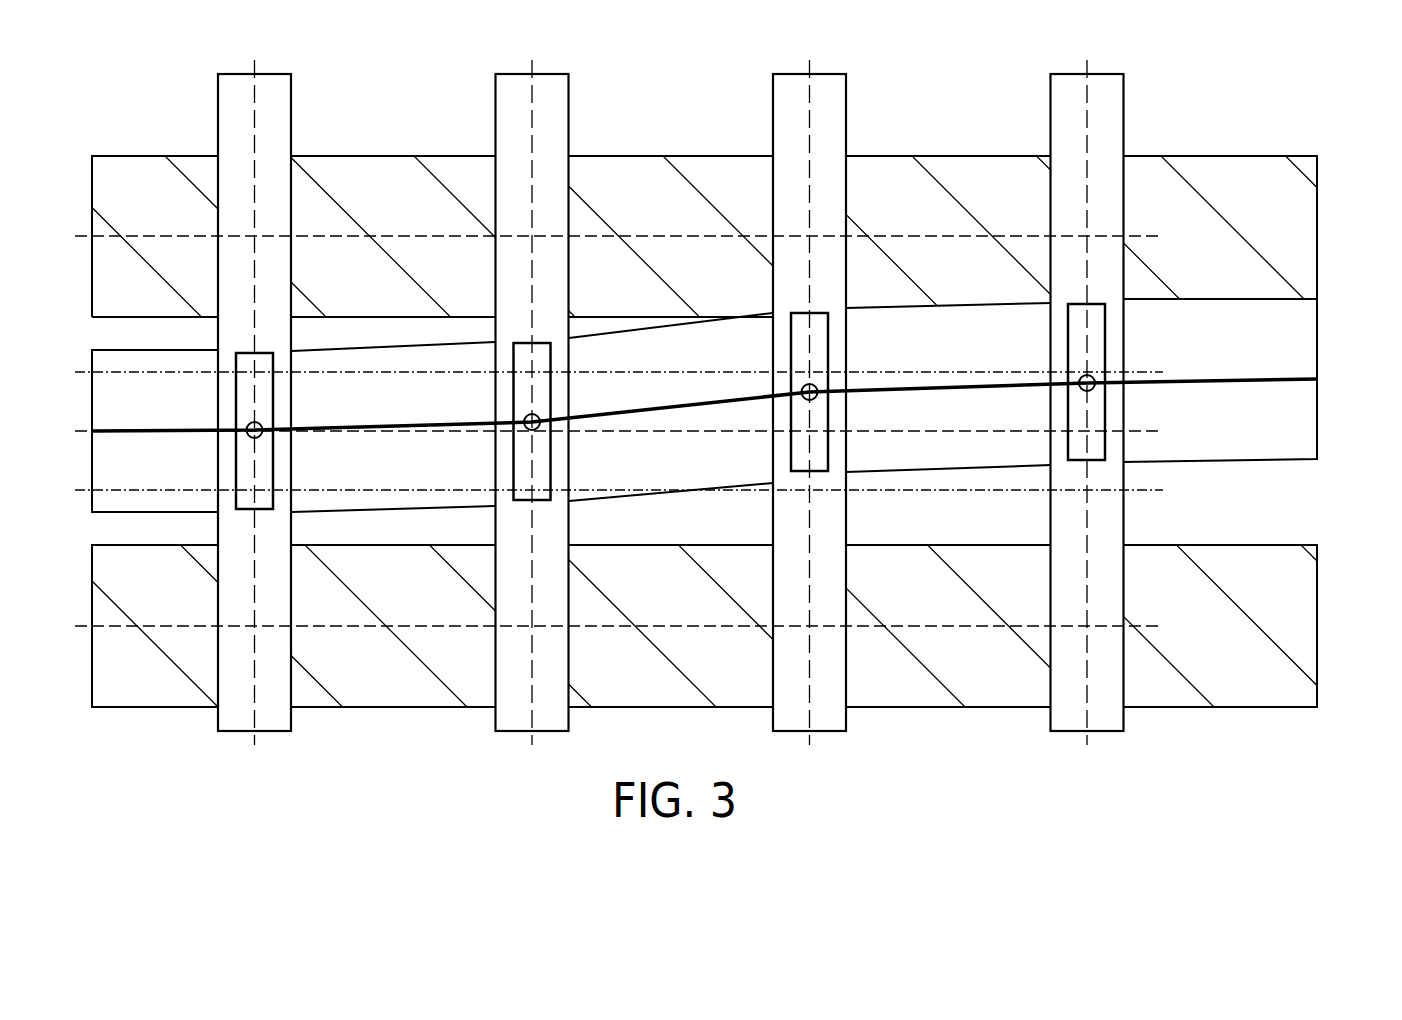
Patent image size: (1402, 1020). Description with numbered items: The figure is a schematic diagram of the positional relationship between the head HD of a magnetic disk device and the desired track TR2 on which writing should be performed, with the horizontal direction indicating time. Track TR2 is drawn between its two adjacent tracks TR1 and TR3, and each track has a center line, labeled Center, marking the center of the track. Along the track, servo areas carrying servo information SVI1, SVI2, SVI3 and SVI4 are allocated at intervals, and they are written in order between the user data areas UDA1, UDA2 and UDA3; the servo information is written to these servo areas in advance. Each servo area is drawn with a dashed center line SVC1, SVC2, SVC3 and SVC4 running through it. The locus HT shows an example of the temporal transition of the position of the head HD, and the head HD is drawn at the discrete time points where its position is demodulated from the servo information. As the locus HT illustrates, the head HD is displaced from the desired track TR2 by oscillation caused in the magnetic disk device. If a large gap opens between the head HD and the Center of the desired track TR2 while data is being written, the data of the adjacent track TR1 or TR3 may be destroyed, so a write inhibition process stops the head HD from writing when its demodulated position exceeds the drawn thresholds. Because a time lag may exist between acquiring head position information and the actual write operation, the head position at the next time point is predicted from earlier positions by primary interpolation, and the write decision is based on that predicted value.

The track TR1 is at (1317, 225).
The track TR2 is at (1317, 418).
The track TR3 is at (1317, 618).
The servo information SVI1 is at (218, 123).
The servo information SVI2 is at (496, 123).
The servo information SVI3 is at (773, 123).
The servo information SVI4 is at (1051, 123).
The first servo center line SVC1 is at (254, 102).
The second servo center line SVC2 is at (532, 102).
The third servo center line SVC3 is at (810, 102).
The fourth servo center line SVC4 is at (1087, 102).
The user data area UDA1 is at (393, 427).
The user data area UDA2 is at (671, 407).
The user data area UDA3 is at (948, 400).
The head HD is at (243, 470).
The locus HT is at (1317, 379).
The center of the desired track Center is at (78, 238).